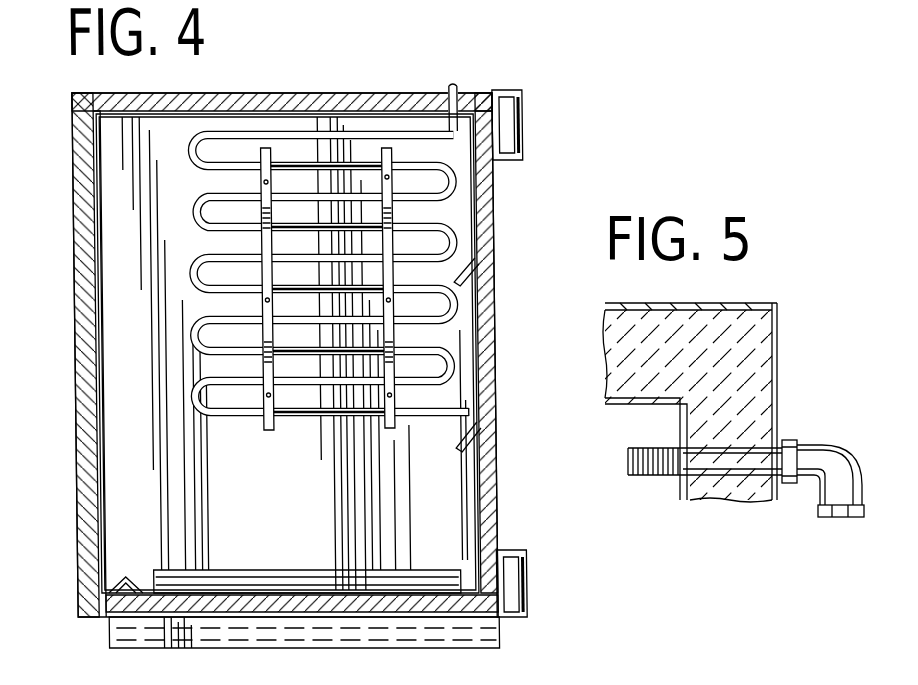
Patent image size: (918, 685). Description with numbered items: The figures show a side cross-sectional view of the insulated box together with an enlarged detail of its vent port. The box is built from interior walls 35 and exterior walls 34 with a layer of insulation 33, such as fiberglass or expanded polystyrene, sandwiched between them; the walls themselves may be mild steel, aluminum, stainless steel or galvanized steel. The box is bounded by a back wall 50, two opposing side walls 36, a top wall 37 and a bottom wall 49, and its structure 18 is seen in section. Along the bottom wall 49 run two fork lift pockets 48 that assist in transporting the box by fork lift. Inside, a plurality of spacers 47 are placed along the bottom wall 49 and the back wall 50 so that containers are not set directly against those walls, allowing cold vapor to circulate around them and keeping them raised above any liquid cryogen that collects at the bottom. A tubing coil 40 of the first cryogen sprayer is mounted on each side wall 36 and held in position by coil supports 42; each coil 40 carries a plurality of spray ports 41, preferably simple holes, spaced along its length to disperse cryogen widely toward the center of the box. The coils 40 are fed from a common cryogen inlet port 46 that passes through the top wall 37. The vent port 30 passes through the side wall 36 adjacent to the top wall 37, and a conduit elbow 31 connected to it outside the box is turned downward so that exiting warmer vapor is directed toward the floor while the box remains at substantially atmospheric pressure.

In FIG. 4, the cabinet housing 18 is at (72, 238).
In FIG. 5, the vent port 30 is at (657, 478).
In FIG. 5, the conduit elbow 31 is at (848, 457).
In FIG. 4, the insulation 33 is at (234, 92).
In FIG. 5, the insulation 33 is at (733, 318).
In FIG. 4, the exterior walls 34 is at (289, 92).
In FIG. 5, the exterior walls 34 is at (778, 380).
In FIG. 4, the interior walls 35 is at (180, 113).
In FIG. 5, the interior walls 35 is at (640, 404).
In FIG. 4, the side walls 36 is at (133, 421).
In FIG. 4, the top wall 37 is at (346, 98).
In FIG. 4, the tubing coils 40 is at (455, 182).
In FIG. 4, the spray ports 41 is at (290, 168).
In FIG. 4, the coil supports 42 is at (267, 431).
In FIG. 4, the cryogen inlet port 46 is at (458, 98).
In FIG. 4, the spacers 47 is at (455, 268).
In FIG. 4, the fork lift pockets 48 is at (523, 122).
In FIG. 4, the bottom wall 49 is at (100, 620).
In FIG. 4, the back wall 50 is at (485, 262).